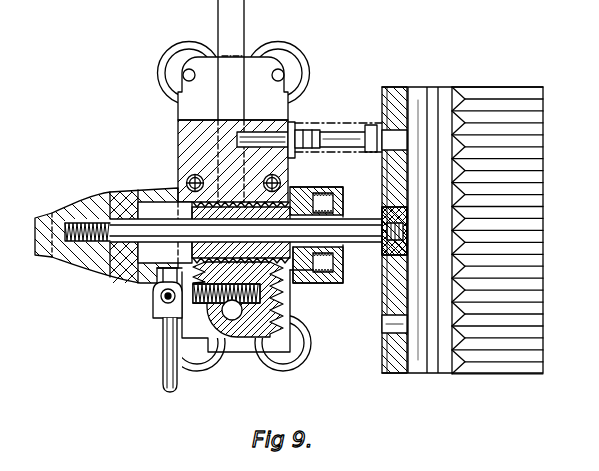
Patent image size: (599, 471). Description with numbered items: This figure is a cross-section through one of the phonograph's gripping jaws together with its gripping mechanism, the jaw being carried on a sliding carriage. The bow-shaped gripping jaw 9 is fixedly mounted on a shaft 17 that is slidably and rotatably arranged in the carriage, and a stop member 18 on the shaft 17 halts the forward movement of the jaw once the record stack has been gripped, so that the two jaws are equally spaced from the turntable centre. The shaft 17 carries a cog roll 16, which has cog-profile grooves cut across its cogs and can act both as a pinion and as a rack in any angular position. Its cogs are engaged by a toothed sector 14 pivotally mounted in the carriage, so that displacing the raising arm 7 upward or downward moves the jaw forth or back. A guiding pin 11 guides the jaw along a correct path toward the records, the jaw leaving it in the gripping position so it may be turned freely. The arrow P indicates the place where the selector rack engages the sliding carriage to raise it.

The gripping jaw 9 is at (396, 93).
The guiding pin 11 is at (311, 129).
The toothed sector 14 is at (280, 306).
The cog roll 16 is at (286, 207).
The shaft 17 is at (360, 235).
The stop member 18 is at (82, 255).
The raising arm 7 is at (165, 351).
The arrow indicating engagement place P is at (233, 359).